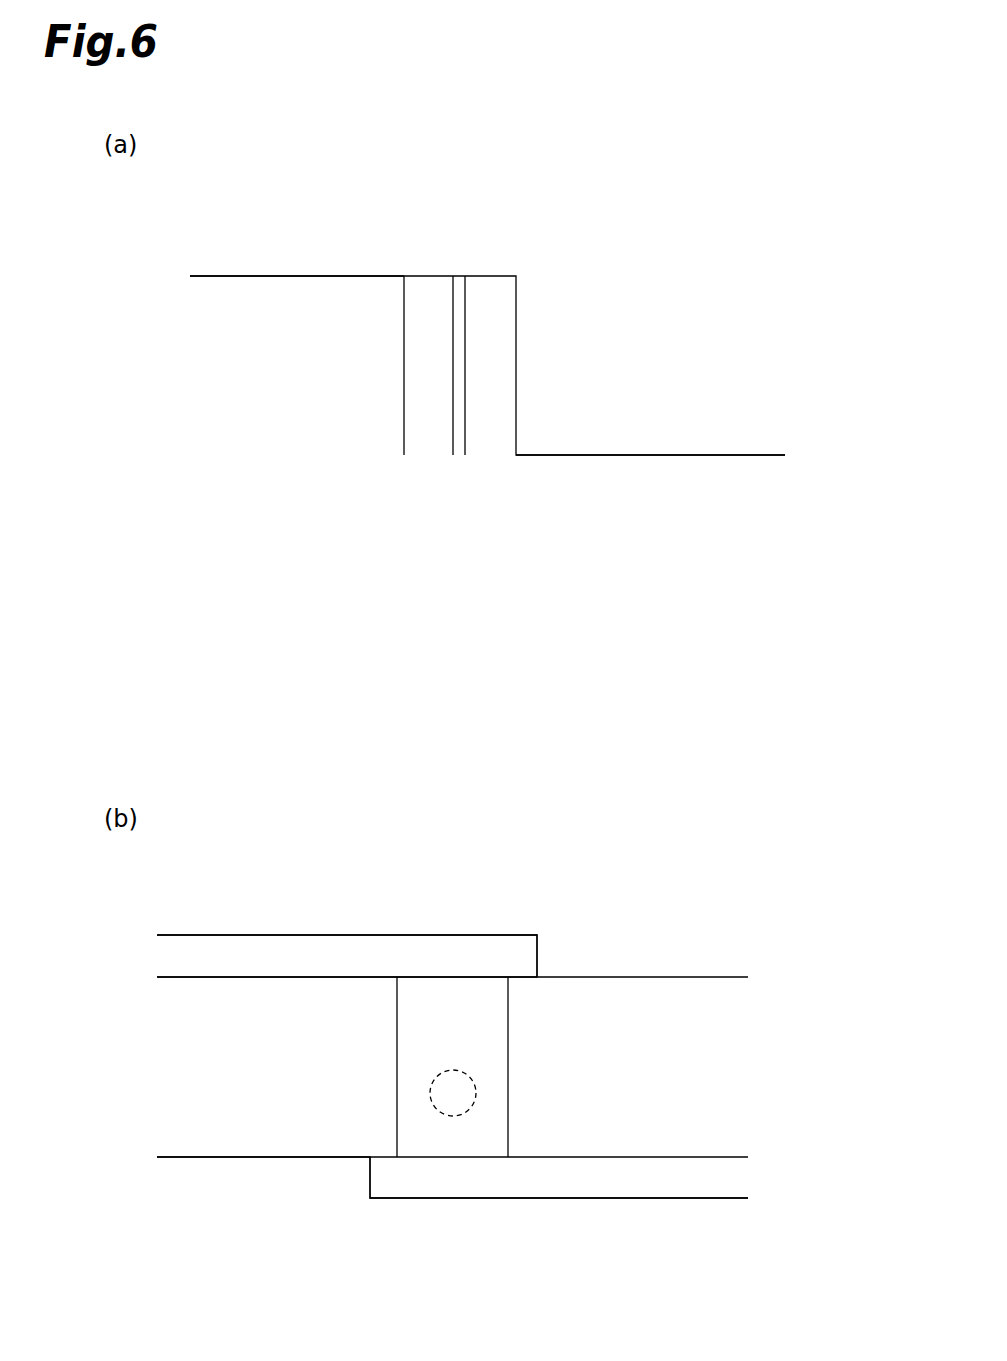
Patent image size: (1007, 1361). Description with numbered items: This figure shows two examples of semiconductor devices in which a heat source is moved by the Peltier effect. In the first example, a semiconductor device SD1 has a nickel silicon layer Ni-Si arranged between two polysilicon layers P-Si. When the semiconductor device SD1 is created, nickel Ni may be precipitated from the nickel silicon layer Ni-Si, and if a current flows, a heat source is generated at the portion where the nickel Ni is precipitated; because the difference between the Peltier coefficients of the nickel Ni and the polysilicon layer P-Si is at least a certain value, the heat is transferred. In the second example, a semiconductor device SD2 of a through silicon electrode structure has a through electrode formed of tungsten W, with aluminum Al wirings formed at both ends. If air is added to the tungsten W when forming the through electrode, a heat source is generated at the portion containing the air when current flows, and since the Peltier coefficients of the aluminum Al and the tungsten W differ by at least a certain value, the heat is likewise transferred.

The semiconductor device SD1 is at (630, 236).
The nickel Ni is at (461, 345).
The nickel silicon layer Ni-Si is at (526, 365).
The polysilicon layer P-Si is at (487, 373).
The semiconductor device SD2 is at (592, 908).
The aluminum wiring Al is at (452, 1085).
The tungsten W is at (452, 1067).
The element air is at (455, 1089).